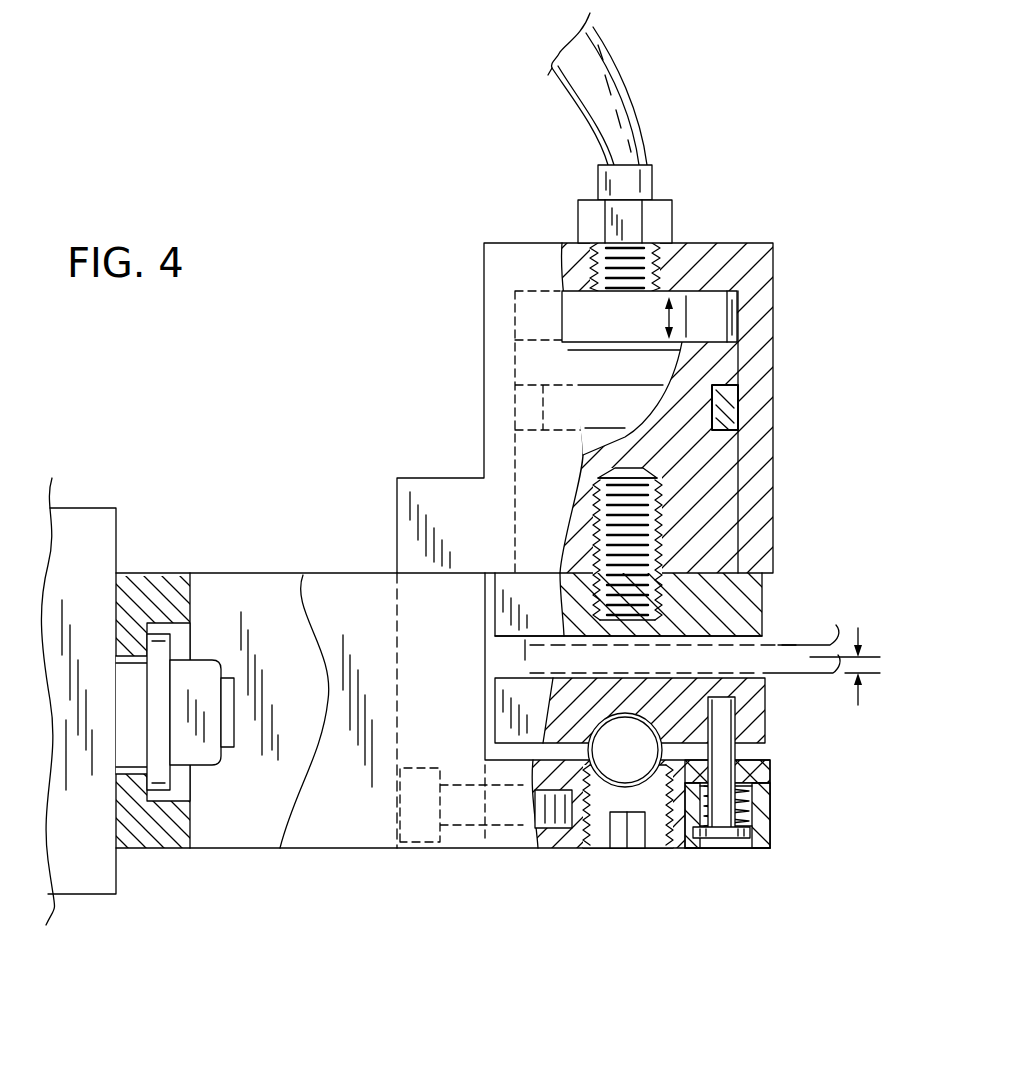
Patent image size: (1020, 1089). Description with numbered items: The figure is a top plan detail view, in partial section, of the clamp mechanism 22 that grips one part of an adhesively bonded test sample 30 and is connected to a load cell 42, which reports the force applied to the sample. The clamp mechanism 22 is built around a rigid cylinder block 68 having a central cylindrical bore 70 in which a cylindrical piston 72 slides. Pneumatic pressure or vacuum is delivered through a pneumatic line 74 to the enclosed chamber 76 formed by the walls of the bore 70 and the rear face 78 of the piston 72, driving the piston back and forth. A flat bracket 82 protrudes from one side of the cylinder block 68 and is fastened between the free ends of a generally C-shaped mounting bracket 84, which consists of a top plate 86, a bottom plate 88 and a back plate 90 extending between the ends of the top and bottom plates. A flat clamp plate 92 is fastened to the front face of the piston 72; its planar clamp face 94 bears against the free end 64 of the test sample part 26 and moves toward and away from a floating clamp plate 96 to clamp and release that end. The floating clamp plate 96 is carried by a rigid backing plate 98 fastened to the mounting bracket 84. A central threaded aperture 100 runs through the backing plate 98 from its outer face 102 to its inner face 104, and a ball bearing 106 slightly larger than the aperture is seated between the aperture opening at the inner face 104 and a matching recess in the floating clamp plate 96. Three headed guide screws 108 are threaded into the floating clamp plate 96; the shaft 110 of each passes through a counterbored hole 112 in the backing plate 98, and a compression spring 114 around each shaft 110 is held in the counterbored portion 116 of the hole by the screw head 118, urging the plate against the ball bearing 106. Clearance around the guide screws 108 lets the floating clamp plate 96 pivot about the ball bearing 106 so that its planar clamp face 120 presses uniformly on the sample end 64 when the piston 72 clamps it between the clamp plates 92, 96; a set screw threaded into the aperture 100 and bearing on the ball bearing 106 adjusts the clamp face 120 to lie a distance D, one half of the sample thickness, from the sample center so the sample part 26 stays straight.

The clamp mechanism 22 is at (444, 331).
The test sample part 26 is at (835, 630).
The test sample 30 is at (808, 630).
The load cell 42 is at (82, 500).
The free end 64 is at (522, 655).
The cylinder block 68 is at (773, 352).
The central cylindrical bore 70 is at (740, 306).
The cylindrical piston 72 is at (712, 478).
The pneumatic line 74 is at (640, 97).
The enclosed chamber 76 is at (695, 305).
The rear face 78 is at (716, 338).
The flat bracket 82 is at (397, 612).
The mounting bracket 84 is at (321, 562).
The top plate 86 is at (357, 811).
The bottom plate 88 is at (239, 595).
The back plate 90 is at (150, 583).
The clamp plate 92 is at (770, 586).
The planar clamp face 94 is at (735, 650).
The floating clamp plate 96 is at (768, 722).
The backing plate 98 is at (772, 846).
The central threaded aperture 100 is at (597, 848).
The outer face 102 is at (760, 850).
The inner face 104 is at (765, 750).
The ball bearing 106 is at (644, 763).
The headed guide screw 108 is at (731, 858).
The shaft 110 is at (738, 745).
The counterbored hole 112 is at (757, 818).
The compression spring 114 is at (690, 808).
The counterbored portion 116 is at (752, 806).
The head 118 is at (710, 836).
The planar clamp face 120 is at (740, 662).